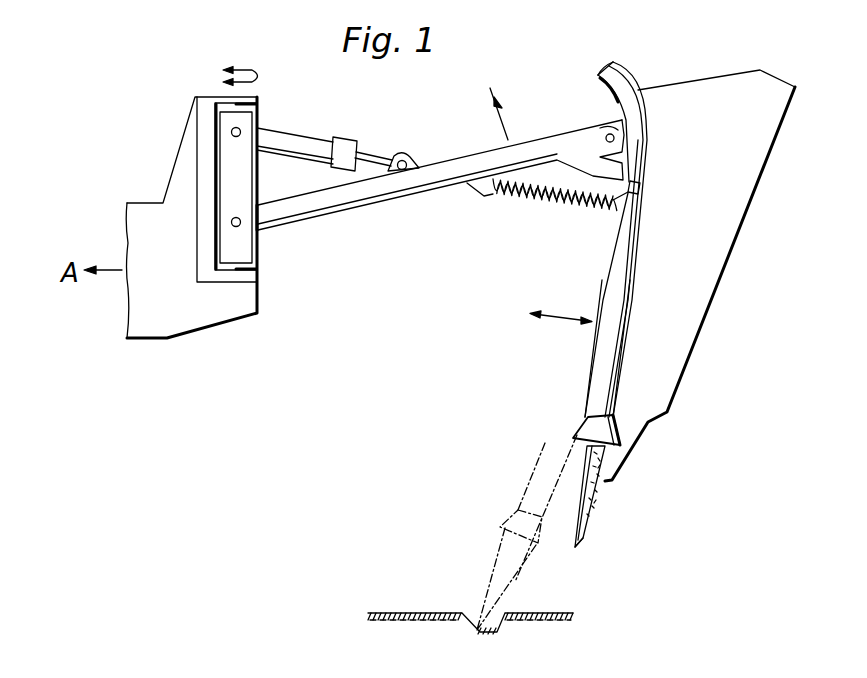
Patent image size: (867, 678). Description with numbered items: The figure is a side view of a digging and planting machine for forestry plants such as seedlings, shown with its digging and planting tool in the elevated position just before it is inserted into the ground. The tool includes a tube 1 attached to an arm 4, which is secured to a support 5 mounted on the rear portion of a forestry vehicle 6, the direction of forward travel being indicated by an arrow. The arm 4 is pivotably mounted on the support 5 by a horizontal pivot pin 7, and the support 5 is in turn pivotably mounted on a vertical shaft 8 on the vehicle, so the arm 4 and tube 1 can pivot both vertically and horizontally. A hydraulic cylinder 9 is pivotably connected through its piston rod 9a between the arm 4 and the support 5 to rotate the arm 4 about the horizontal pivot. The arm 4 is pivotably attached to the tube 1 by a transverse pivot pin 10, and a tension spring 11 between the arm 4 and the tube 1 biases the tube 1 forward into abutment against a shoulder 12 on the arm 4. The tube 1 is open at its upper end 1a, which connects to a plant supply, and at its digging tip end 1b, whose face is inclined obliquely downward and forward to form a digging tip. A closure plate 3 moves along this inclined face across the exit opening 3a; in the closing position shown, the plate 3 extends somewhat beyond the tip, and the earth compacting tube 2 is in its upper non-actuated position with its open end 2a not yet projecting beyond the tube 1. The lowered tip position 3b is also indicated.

The tube 1 is at (617, 98).
The upper end 1a is at (610, 63).
The digging tip end 1b is at (575, 536).
The earth compacting tube 2 is at (600, 374).
The open end 2a is at (588, 428).
The closure plate 3 is at (600, 505).
The exit opening 3a is at (580, 492).
The tip point 3b is at (577, 549).
The arm 4 is at (338, 197).
The support 5 is at (243, 250).
The forestry vehicle 6 is at (155, 318).
The horizontal pivot pin 7 is at (241, 225).
The vertical shaft 8 is at (242, 272).
The hydraulic cylinder 9 is at (283, 140).
The piston rod 9a is at (378, 158).
The transverse pivot pin 10 is at (604, 136).
The tension spring 11 is at (530, 197).
The shoulder 12 is at (607, 172).